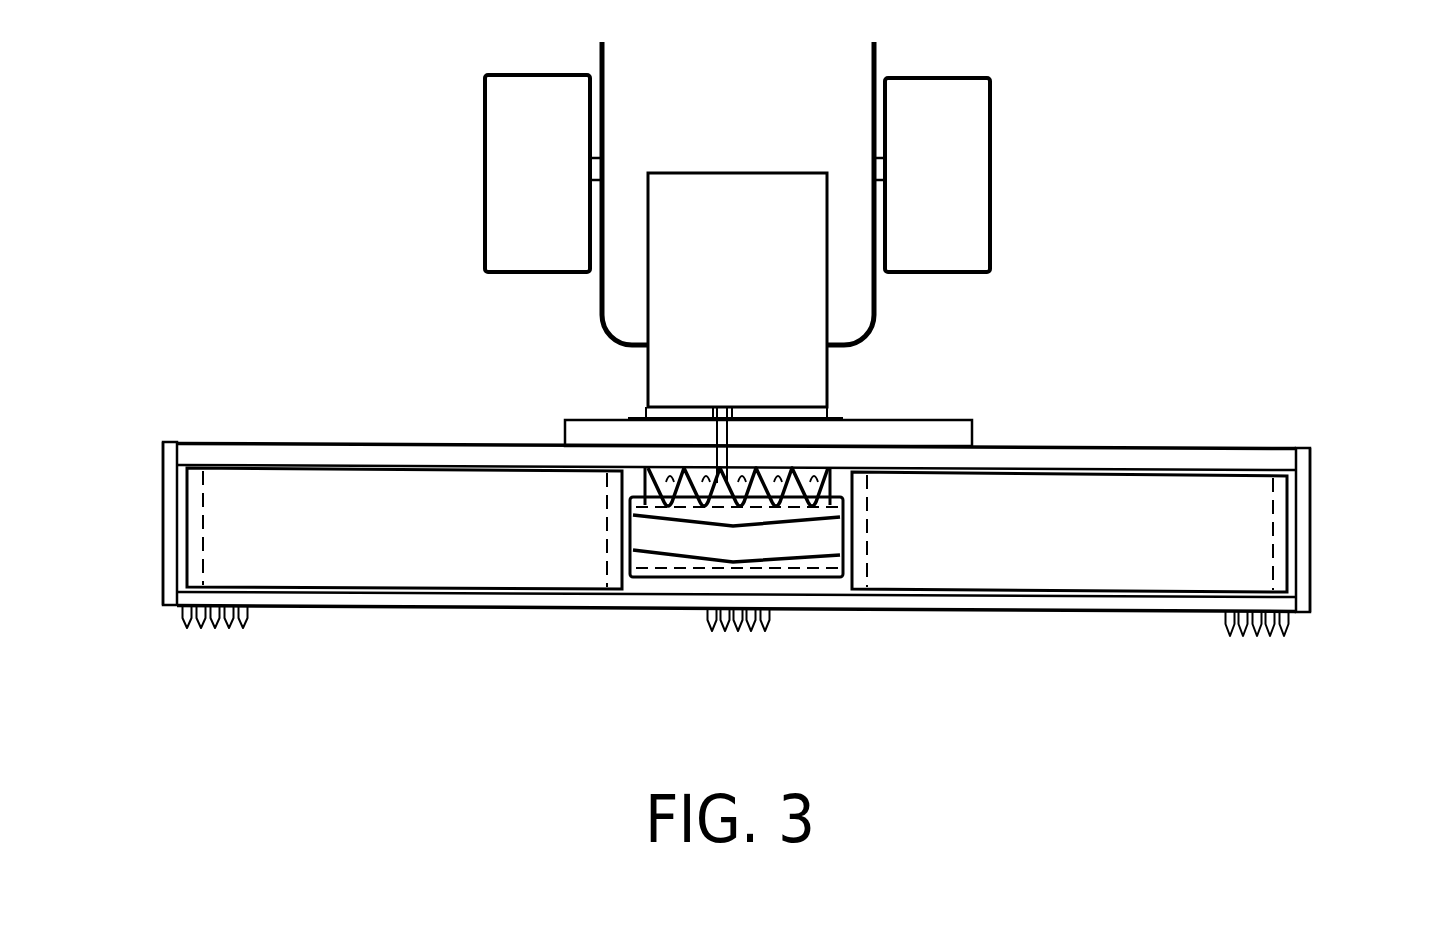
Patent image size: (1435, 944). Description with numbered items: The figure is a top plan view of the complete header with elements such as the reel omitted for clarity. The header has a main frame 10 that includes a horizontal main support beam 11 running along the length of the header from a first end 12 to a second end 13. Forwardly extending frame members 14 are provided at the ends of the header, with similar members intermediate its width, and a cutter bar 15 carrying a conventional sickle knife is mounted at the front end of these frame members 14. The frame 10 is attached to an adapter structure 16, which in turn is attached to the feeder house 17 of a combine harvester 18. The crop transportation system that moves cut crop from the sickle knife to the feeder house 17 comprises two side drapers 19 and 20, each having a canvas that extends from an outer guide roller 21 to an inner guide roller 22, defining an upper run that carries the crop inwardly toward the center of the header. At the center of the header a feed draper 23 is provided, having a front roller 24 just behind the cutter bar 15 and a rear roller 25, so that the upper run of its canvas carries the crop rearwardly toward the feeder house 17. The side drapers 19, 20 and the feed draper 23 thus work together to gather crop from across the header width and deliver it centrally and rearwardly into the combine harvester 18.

The main frame 10 is at (1135, 460).
The horizontal main support beam 11 is at (1010, 458).
The first end 12 is at (172, 445).
The second end 13 is at (1300, 450).
The forwardly extending frame members 14 is at (155, 518).
The cutter bar 15 is at (1015, 612).
The adapter structure 16 is at (948, 435).
The feeder house 17 is at (670, 368).
The combine harvester 18 is at (992, 210).
The side draper 19 is at (1057, 555).
The side draper 20 is at (528, 563).
The outer guide roller 21 is at (1272, 543).
The inner guide roller 22 is at (868, 562).
The feed draper 23 is at (778, 540).
The front roller 24 is at (682, 570).
The rear roller 25 is at (658, 510).